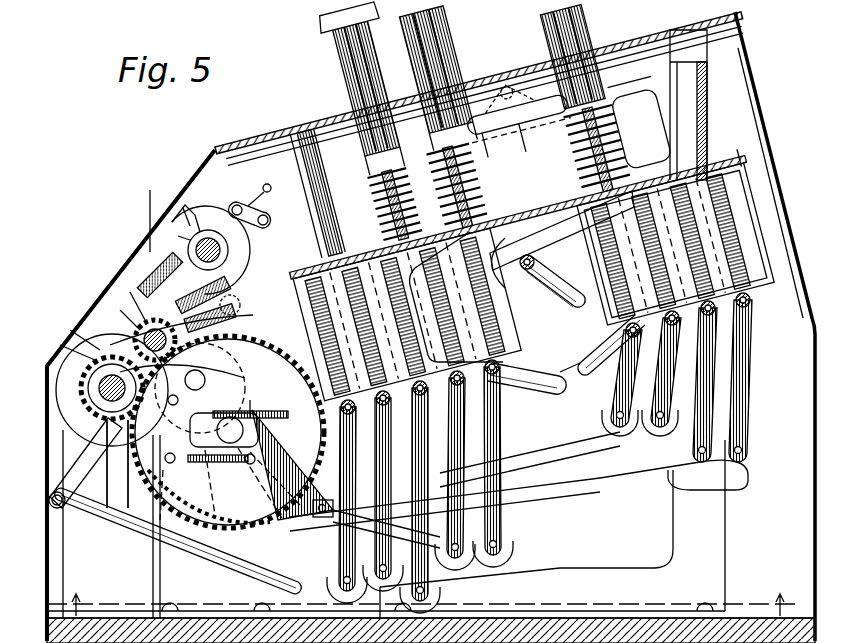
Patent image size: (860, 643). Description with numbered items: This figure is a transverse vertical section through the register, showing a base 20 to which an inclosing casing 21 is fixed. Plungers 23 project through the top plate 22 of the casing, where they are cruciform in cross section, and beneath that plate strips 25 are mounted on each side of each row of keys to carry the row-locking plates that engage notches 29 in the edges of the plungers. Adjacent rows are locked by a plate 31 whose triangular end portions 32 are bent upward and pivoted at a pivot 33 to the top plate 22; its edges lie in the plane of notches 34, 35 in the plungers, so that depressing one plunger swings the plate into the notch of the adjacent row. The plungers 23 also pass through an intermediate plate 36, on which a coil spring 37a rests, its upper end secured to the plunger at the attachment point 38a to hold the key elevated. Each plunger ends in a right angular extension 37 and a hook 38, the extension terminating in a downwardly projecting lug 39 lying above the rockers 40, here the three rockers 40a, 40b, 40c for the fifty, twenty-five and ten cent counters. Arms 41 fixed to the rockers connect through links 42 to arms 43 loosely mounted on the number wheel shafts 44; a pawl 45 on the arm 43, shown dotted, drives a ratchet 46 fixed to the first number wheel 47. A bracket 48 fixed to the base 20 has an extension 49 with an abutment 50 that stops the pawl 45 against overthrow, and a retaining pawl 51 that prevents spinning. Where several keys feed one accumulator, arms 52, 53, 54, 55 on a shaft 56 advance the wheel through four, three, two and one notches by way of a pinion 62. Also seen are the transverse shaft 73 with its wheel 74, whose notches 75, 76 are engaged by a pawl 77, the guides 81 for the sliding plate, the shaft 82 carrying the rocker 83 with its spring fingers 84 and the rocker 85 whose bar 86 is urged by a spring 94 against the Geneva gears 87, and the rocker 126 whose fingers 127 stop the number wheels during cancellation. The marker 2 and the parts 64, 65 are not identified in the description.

The section line 2- 2 is at (417, 605).
The base 20 is at (592, 602).
The inclosing casing 21 is at (215, 147).
The top plate 22 is at (473, 77).
The plungers 23 is at (467, 91).
The strips 25 is at (486, 99).
The notches 29 is at (329, 168).
The plate 31 is at (517, 152).
The triangular end portions 32 is at (616, 47).
The pivot 33 is at (502, 73).
The notches 34 is at (628, 85).
The notches 35 is at (523, 138).
The intermediate plate 36 is at (514, 202).
The right angular extension 37 is at (653, 245).
The coil spring 37a is at (495, 177).
The hook 38 is at (549, 281).
The spring attachment point 38a is at (500, 175).
The lug 39 is at (407, 314).
The rockers 40 is at (562, 358).
The rocker 40a is at (437, 435).
The rocker 40b is at (397, 453).
The rocker 40c is at (357, 465).
The arms 41 is at (500, 434).
The links 42 is at (626, 490).
The arms 43 is at (61, 492).
The number wheel shafts 44 is at (100, 325).
The pawl 45 is at (86, 463).
The ratchet 46 is at (65, 340).
The first number wheel 47 is at (56, 364).
The bracket 48 is at (207, 563).
The extension 49 is at (146, 526).
The abutment 50 is at (107, 464).
The pawl 51 is at (205, 383).
The arm 52 is at (265, 419).
The arm 53 is at (248, 433).
The arm 54 is at (235, 484).
The arm 55 is at (209, 496).
The shaft 56 is at (250, 399).
The pinion 62 is at (62, 346).
The arm 64 is at (566, 305).
The rod 65 is at (611, 345).
The transverse shaft 73 is at (218, 228).
The wheel 74 is at (182, 212).
The notch 75 is at (205, 206).
The notch 76 is at (178, 236).
The pawl 77 is at (262, 205).
The guides 81 is at (120, 310).
The shaft 82 is at (228, 432).
The rocker 83 is at (245, 282).
The spring fingers 84 is at (133, 292).
The rocker 85 is at (262, 321).
The bar 86 is at (230, 251).
The Geneva gears 87 is at (130, 292).
The spring 94 is at (292, 449).
The rocker 126 is at (250, 303).
The fingers 127 is at (151, 212).